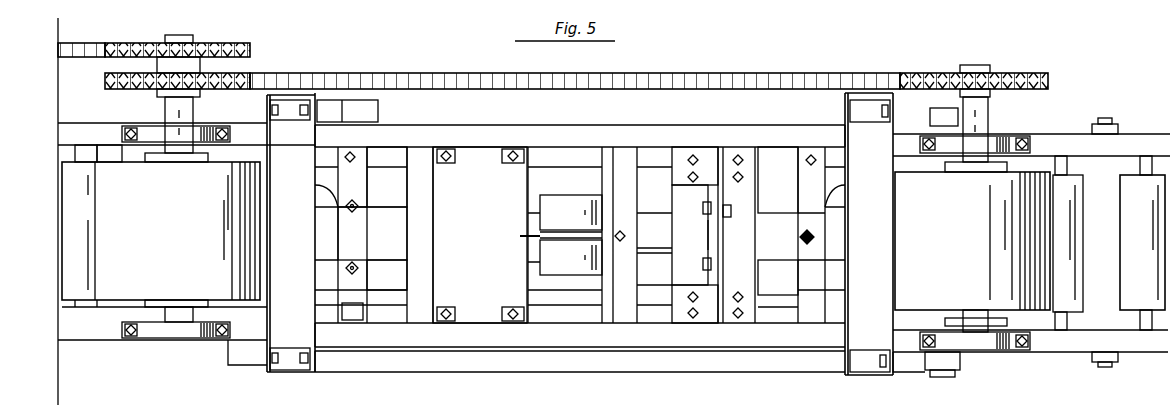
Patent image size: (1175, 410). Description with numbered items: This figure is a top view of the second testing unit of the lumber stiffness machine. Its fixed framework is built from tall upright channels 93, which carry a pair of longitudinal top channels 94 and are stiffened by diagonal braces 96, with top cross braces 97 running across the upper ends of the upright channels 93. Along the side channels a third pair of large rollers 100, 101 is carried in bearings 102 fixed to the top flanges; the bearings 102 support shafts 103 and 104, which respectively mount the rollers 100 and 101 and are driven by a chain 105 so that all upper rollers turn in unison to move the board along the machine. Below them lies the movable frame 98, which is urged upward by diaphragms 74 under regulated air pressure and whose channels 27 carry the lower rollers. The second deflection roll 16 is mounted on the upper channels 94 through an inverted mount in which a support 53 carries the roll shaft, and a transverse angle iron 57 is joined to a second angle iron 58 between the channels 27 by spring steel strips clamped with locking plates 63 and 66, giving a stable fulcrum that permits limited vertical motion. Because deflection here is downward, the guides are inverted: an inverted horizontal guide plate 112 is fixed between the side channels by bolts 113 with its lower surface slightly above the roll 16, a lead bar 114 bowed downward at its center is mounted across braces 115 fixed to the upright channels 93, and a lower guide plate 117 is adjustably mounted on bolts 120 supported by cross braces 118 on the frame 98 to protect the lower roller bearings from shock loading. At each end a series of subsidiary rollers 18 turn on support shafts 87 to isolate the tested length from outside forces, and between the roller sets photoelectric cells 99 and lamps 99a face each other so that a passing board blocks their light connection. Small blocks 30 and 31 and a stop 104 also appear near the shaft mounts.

The chain 105 is at (246, 43).
The large roller 100 is at (108, 162).
The bearings 102 is at (212, 119).
The support shafts 87 is at (85, 145).
The subsidiary rollers 18 is at (84, 186).
The large roller 101 is at (1025, 172).
The shaft 103 is at (190, 338).
The braces 115 is at (230, 362).
The top cross braces 97 is at (300, 300).
The upright channels 93 is at (880, 378).
The block 31 is at (378, 112).
The longitudinal top channels 94 is at (530, 128).
The diagonal braces 96 is at (668, 372).
The diaphragms 74 is at (315, 197).
The cross braces 118 is at (812, 216).
The bolts 120 is at (349, 211).
The movable frame 98 is at (400, 171).
The lower guide plate 117 is at (372, 233).
The lead bar 114 is at (392, 295).
The stop 30 is at (345, 320).
The shaft 104 is at (978, 356).
The horizontal guide plate 112 is at (480, 235).
The bolts 113 is at (500, 172).
The second deflection roll 16 is at (572, 192).
The support 53 is at (547, 236).
The locking plates 66 is at (672, 183).
The transverse angle iron 57 is at (694, 213).
The locking plate 63 is at (712, 236).
The transverse angle iron 58 is at (746, 245).
The channels 27 is at (790, 162).
The photoelectric cells 99 is at (1104, 118).
The lamps 99a is at (1108, 367).